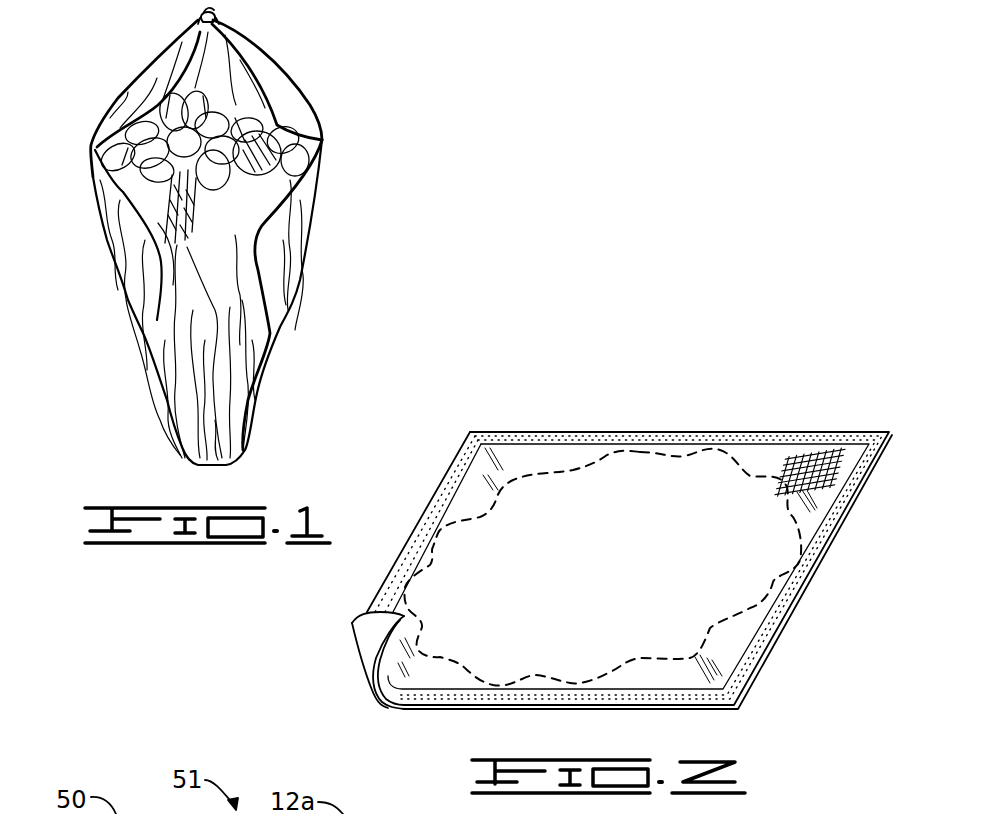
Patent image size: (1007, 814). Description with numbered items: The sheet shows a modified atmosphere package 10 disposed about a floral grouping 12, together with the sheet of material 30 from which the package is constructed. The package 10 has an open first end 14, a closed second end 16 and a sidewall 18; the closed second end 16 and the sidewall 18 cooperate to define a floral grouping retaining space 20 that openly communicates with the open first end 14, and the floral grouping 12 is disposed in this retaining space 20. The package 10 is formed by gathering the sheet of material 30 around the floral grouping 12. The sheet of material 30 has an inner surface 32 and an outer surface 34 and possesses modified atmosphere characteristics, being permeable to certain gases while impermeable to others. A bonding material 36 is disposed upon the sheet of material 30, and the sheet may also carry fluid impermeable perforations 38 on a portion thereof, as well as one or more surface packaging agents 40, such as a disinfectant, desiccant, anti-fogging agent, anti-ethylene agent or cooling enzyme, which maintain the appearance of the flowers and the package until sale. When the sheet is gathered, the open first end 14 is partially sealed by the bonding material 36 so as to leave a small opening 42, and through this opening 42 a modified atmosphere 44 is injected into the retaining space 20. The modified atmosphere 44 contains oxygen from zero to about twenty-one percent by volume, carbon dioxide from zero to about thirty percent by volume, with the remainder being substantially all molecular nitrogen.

In FIG. 1, the modified atmosphere package 10 is at (354, 52).
In FIG. 1, the floral grouping 12 is at (283, 151).
In FIG. 1, the open first end 14 is at (204, 19).
In FIG. 1, the closed second end 16 is at (197, 465).
In FIG. 1, the sidewall 18 is at (200, 330).
In FIG. 1, the floral grouping retaining space 20 is at (110, 200).
In FIG. 1, the sheet of material 30 is at (298, 246).
In FIG. 2, the sheet of material 30 is at (580, 518).
In FIG. 2, the inner surface 32 is at (463, 502).
In FIG. 2, the outer surface 34 is at (373, 632).
In FIG. 2, the bonding material 36 is at (620, 431).
In FIG. 1, the fluid impermeable perforations 38 is at (143, 192).
In FIG. 2, the fluid impermeable perforations 38 is at (712, 630).
In FIG. 2, the surface packaging agent 40 is at (815, 467).
In FIG. 1, the opening 42 is at (214, 17).
In FIG. 1, the modified atmosphere 44 is at (240, 105).